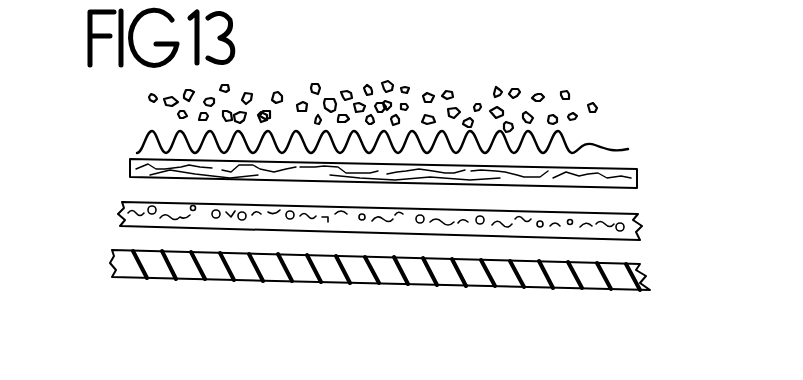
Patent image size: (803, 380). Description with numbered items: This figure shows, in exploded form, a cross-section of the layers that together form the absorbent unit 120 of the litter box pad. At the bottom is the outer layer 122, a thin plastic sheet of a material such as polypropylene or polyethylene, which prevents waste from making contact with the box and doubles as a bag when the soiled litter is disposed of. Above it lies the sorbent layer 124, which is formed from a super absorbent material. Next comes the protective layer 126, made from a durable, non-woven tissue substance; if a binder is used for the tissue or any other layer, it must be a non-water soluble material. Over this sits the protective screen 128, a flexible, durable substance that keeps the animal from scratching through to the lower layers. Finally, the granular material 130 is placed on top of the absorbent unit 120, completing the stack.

The absorbent unit 120 is at (78, 206).
The outer layer 122 is at (618, 283).
The sorbent layer 124 is at (640, 219).
The protective layer 126 is at (637, 179).
The protective screen 128 is at (412, 149).
The granular material 130 is at (597, 108).